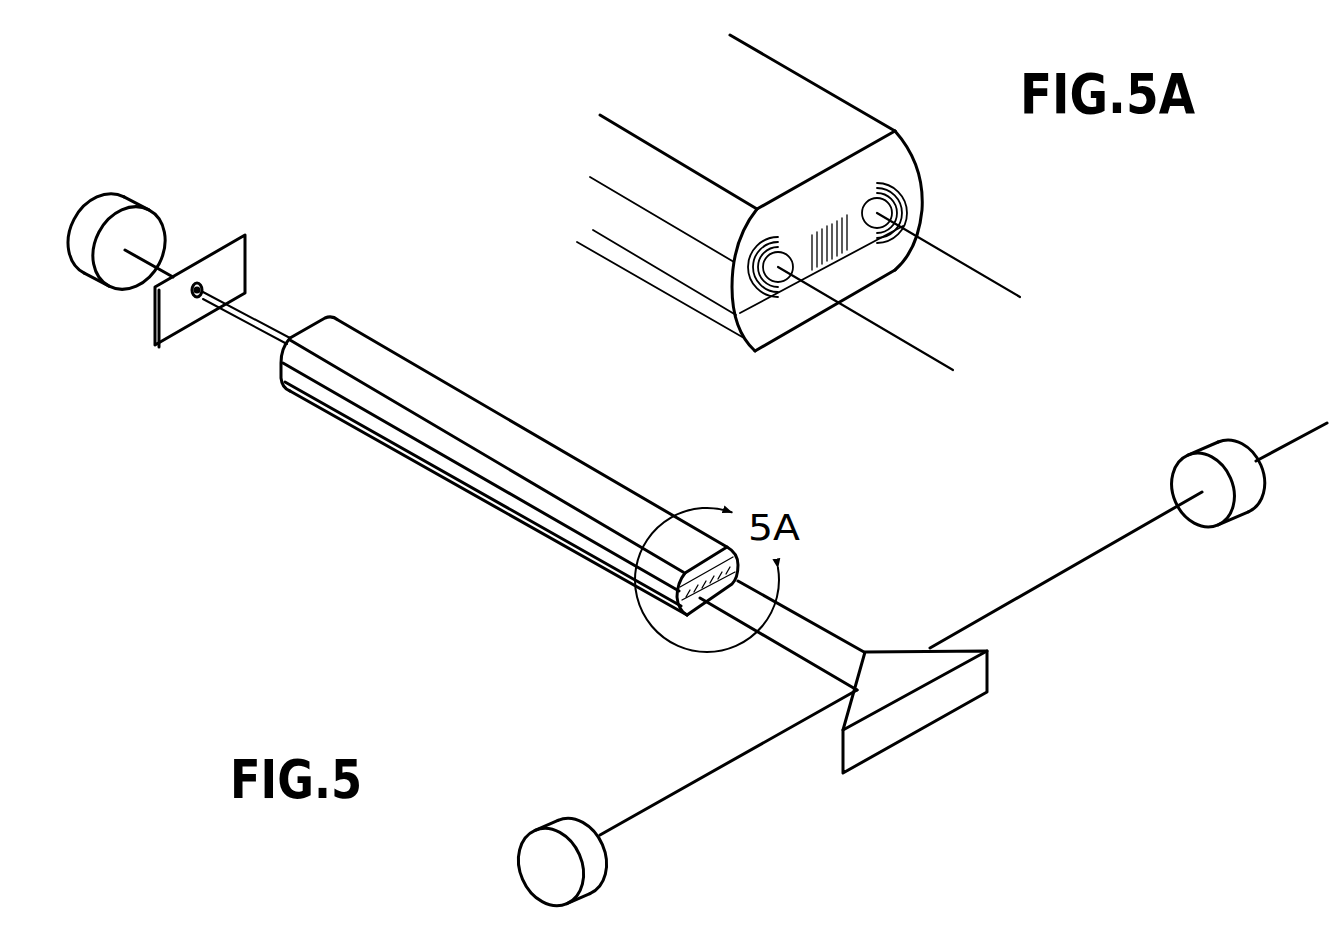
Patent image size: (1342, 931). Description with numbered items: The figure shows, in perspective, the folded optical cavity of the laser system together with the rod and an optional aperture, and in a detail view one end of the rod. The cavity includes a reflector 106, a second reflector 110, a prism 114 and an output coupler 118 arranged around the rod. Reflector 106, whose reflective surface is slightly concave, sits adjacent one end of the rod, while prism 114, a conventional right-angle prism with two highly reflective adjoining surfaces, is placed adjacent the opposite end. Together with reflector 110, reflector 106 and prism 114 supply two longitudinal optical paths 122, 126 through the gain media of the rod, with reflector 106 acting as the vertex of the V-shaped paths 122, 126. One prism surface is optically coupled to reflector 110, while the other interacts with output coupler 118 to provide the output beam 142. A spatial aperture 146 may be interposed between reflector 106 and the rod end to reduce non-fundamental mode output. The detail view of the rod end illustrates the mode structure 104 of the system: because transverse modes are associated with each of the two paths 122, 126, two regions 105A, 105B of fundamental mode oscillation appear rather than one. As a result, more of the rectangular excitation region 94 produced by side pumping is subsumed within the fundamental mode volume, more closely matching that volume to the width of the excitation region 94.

In FIG. 5A, the excitation region 94 is at (927, 180).
In FIG. 5A, the mode structure 104 is at (736, 186).
In FIG. 5A, the region of TEM00 mode oscillation 105A is at (783, 298).
In FIG. 5A, the region of TEM00 mode oscillation 105B is at (881, 241).
In FIG. 5, the reflector 106 is at (85, 260).
In FIG. 5, the reflector 110 is at (542, 828).
In FIG. 5, the prism 114 is at (990, 677).
In FIG. 5, the output coupler 118 is at (1208, 447).
In FIG. 5, the longitudinal optical path 122 is at (773, 642).
In FIG. 5, the longitudinal optical path 126 is at (847, 637).
In FIG. 5, the output beam 142 is at (1283, 447).
In FIG. 5, the spatial aperture 146 is at (180, 343).